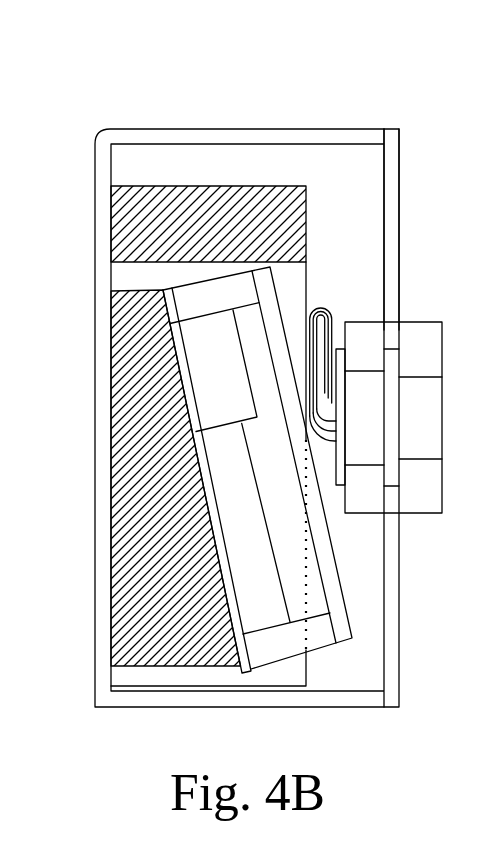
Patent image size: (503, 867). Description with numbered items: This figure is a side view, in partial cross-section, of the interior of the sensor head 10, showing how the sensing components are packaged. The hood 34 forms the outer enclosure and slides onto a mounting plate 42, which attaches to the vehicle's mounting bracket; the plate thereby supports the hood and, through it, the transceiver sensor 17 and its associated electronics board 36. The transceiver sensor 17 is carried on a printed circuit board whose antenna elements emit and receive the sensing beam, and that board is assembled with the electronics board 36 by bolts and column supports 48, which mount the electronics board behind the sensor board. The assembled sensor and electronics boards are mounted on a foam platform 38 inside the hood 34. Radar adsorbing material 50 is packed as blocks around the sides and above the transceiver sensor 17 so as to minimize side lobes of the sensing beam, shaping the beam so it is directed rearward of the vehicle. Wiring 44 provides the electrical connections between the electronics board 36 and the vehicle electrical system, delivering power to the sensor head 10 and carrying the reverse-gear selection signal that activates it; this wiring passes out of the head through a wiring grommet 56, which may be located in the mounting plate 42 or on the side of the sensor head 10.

The sensor head 10 is at (282, 101).
The hood 34 is at (131, 129).
The mounting plate 42 is at (393, 142).
The radar adsorbing material 50 is at (151, 228).
The foam platform 38 is at (159, 579).
The electronics board 36 is at (276, 304).
The column supports 48 is at (182, 306).
The transceiver sensor 17 is at (208, 380).
The wiring 44 is at (322, 318).
The wiring grommet 56 is at (416, 503).